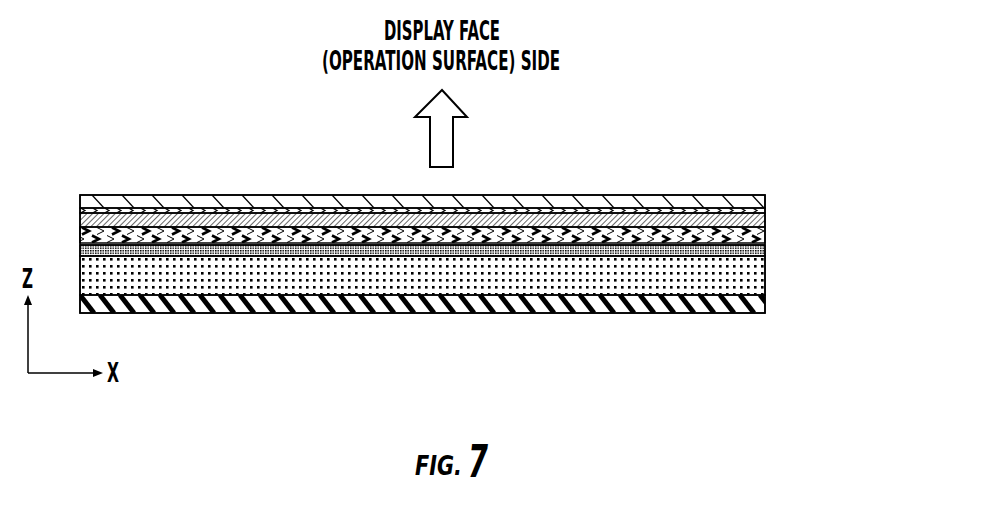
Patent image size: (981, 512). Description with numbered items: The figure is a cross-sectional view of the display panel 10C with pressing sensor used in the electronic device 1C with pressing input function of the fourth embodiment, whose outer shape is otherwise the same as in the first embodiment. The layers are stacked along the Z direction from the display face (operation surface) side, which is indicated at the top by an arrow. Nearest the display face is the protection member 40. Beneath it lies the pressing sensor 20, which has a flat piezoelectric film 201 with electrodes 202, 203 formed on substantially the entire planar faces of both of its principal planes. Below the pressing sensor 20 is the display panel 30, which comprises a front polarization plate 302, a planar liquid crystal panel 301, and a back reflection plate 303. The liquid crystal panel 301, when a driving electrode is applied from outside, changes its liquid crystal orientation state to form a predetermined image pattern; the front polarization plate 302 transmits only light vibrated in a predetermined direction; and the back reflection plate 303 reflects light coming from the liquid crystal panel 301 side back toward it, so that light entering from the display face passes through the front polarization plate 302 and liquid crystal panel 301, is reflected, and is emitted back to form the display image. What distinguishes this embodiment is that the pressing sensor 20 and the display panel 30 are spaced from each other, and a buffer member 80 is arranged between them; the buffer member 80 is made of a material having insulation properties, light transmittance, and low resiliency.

The electronic device with pressing input function 1C is at (158, 158).
The display panel with pressing sensor 10C is at (882, 189).
The pressing sensor 20 is at (473, 213).
The electrode 202 is at (766, 209).
The piezoelectric film 201 is at (766, 219).
The electrode 203 is at (766, 235).
The display panel 30 is at (473, 290).
The front polarization plate 302 is at (766, 251).
The liquid crystal panel 301 is at (766, 279).
The back reflection plate 303 is at (766, 306).
The protection member 40 is at (720, 201).
The buffer member 80 is at (80, 240).